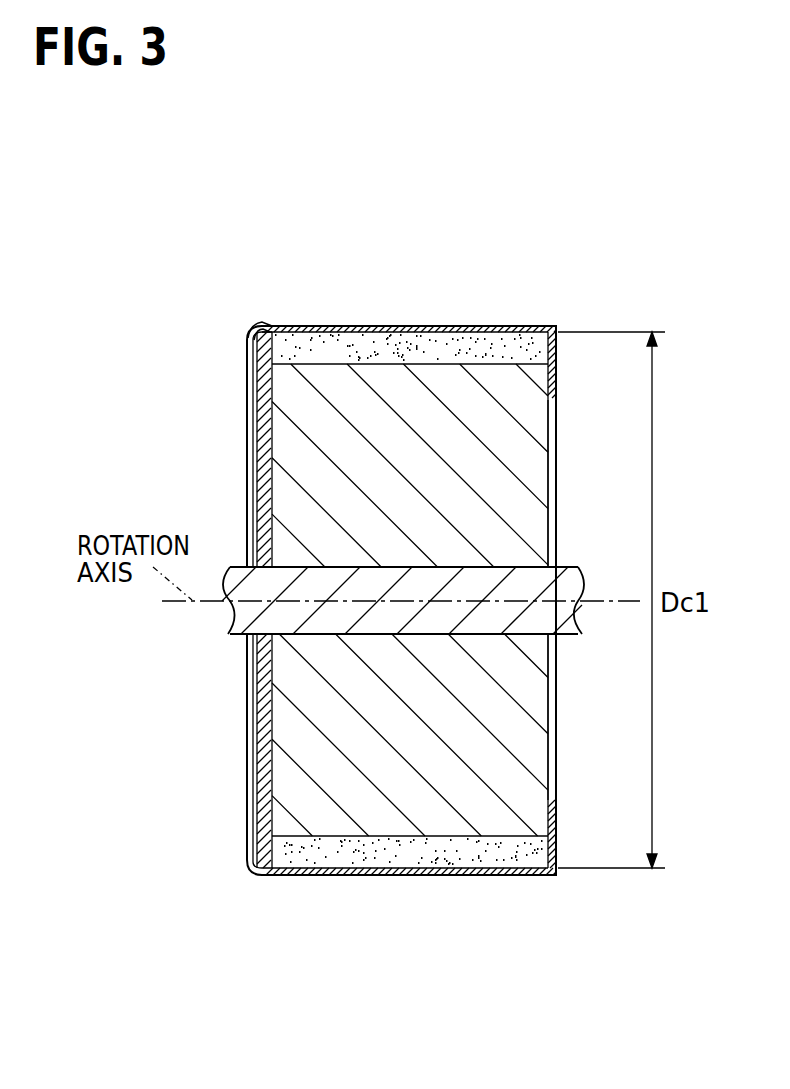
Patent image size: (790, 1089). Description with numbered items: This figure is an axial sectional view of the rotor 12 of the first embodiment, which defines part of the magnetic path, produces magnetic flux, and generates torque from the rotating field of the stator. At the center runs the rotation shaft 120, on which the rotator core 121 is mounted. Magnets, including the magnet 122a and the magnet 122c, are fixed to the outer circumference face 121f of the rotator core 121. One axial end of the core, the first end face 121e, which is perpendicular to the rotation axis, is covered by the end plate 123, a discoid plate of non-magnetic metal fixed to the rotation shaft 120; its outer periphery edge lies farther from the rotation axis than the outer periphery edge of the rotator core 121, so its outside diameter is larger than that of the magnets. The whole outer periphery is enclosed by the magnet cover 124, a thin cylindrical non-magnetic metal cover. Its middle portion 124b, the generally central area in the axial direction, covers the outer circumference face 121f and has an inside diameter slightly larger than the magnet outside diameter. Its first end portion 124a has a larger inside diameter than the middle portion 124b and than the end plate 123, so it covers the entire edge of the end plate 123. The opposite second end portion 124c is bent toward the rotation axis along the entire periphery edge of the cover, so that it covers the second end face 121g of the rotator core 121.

The rotor 12 is at (391, 290).
The rotation shaft 120 is at (572, 638).
The rotator core 121 is at (530, 742).
The first end face 121e is at (267, 384).
The outer circumference face 121f is at (328, 362).
The second end face 121g is at (550, 435).
The magnet 122a is at (467, 345).
The magnet 122c is at (460, 860).
The end plate 123 is at (263, 762).
The magnet cover 124 is at (421, 877).
The first end portion 124a is at (262, 324).
The middle portion 124b is at (436, 326).
The second end portion 124c is at (552, 393).